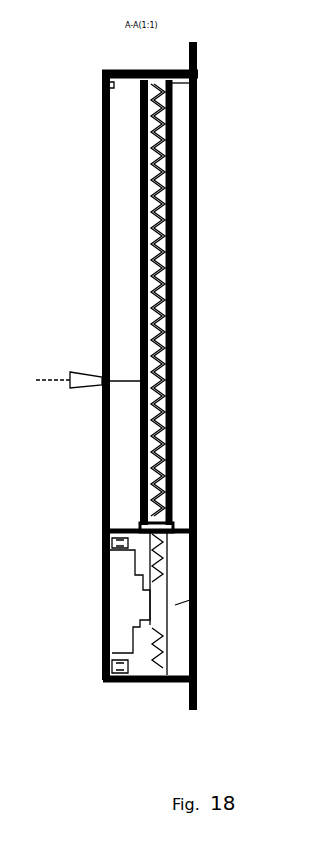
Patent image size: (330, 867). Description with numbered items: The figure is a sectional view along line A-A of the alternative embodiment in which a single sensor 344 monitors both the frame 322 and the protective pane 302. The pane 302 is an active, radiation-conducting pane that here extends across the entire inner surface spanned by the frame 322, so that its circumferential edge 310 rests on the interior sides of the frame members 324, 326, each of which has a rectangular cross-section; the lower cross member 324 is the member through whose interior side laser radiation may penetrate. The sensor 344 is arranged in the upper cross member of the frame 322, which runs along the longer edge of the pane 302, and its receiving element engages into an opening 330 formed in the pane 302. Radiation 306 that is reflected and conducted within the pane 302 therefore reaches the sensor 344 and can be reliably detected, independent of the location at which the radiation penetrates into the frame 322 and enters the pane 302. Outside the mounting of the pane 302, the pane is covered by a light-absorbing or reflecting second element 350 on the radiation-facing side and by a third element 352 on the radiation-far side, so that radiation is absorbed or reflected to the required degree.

The pane 302 is at (175, 332).
The radiation reflected within the pane 306 is at (172, 405).
The circumferential edge 310 is at (168, 65).
The frame 322 is at (199, 236).
The lower cross member 324 is at (195, 622).
The frame member 326 is at (196, 82).
The opening 330 is at (190, 605).
The sensor 344 is at (118, 598).
The second element 350 is at (145, 205).
The third element 352 is at (180, 158).